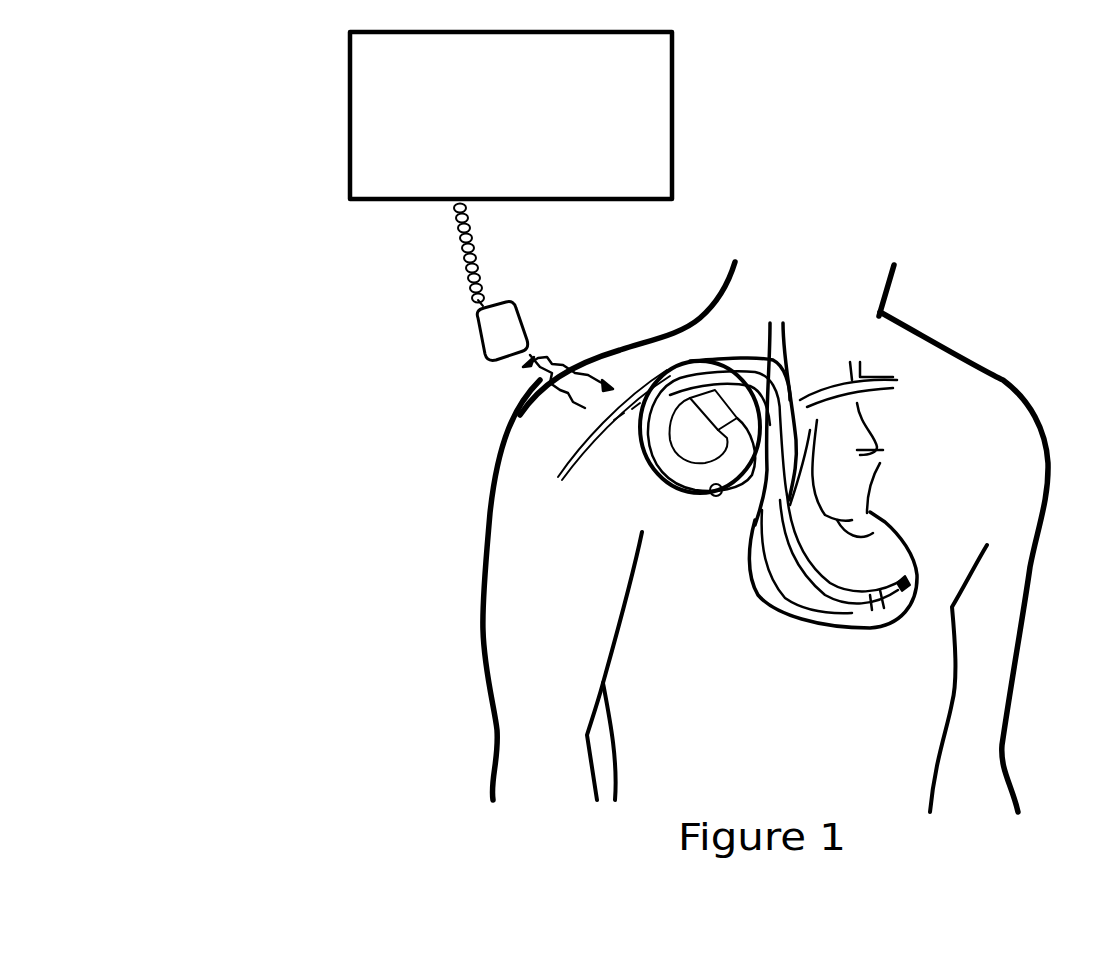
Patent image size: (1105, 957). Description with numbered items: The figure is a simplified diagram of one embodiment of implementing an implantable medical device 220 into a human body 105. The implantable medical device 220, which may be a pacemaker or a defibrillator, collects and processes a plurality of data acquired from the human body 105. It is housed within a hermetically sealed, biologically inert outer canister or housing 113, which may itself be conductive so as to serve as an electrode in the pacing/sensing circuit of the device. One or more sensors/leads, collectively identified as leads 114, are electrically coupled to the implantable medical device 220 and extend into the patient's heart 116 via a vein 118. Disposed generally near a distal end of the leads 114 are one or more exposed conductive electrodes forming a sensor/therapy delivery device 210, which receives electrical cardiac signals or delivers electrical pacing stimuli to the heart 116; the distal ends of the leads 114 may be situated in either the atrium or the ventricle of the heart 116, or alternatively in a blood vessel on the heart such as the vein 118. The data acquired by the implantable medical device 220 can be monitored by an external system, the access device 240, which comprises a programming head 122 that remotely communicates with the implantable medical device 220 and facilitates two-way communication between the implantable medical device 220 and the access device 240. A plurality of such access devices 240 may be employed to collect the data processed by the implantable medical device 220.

The human body 105 is at (1012, 388).
The access device 240 is at (390, 203).
The programming head 122 is at (510, 320).
The implantable medical device 220 is at (690, 462).
The housing 113 is at (700, 450).
The leads 114 is at (717, 498).
The vein 118 is at (647, 388).
The heart 116 is at (863, 627).
The sensor/therapy delivery device 210 is at (907, 583).